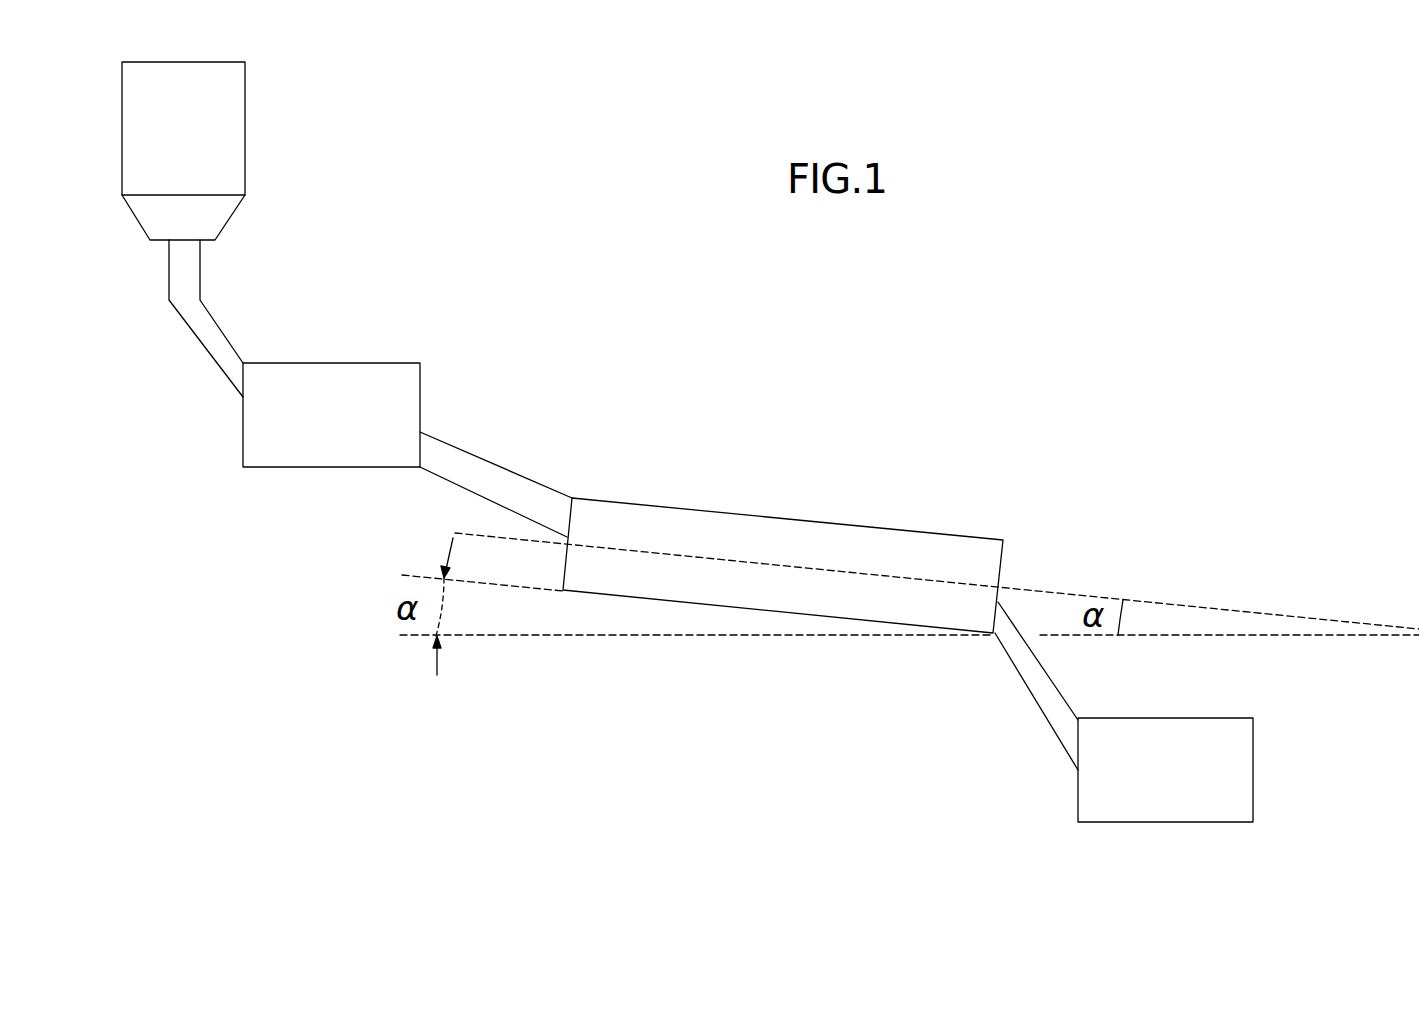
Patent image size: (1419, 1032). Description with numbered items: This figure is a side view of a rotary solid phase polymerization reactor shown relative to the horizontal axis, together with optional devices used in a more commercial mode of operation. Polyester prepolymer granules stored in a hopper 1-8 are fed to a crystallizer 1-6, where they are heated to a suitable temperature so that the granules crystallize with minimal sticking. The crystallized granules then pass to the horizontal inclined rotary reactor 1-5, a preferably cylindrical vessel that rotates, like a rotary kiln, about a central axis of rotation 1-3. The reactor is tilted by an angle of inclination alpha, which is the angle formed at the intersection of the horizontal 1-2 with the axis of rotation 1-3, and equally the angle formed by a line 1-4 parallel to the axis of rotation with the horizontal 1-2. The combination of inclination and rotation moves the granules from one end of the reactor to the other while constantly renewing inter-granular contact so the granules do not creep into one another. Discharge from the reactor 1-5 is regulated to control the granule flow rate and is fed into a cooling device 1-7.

The hopper 1-8 is at (245, 125).
The crystallizer 1-6 is at (420, 397).
The horizontal inclined rotary reactor 1-5 is at (793, 520).
The cooling device 1-7 is at (1150, 822).
The horizontal 1-2 is at (615, 637).
The line parallel to the axis of rotation 1-4 is at (422, 575).
The axis of rotation 1-3 is at (1043, 587).